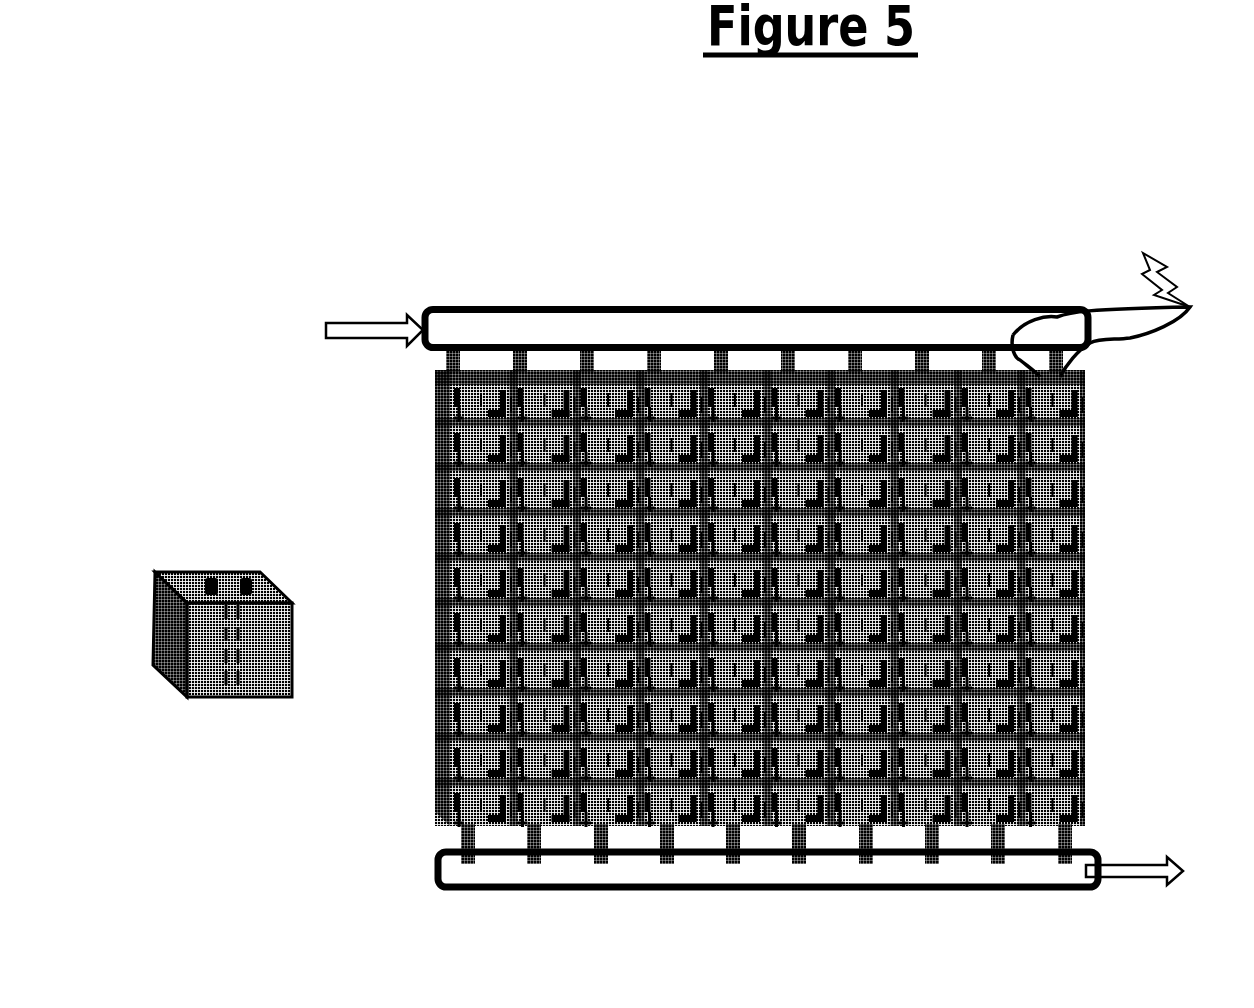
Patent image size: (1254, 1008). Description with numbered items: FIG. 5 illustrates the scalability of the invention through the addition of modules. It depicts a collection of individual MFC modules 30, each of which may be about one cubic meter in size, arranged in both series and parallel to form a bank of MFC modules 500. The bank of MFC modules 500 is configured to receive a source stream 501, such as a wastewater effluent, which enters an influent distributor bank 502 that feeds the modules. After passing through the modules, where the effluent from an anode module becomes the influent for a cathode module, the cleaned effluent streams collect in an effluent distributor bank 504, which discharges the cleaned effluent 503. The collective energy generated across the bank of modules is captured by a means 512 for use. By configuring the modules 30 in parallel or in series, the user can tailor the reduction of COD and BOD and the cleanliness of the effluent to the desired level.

The bank of MFC modules 500 is at (424, 722).
The source stream 501 is at (335, 337).
The influent distributor bank 502 is at (756, 330).
The cleaned effluent 503 is at (1170, 859).
The effluent distributor bank 504 is at (768, 870).
The means for capturing collective energy 512 is at (1130, 297).
The module 30 is at (239, 570).